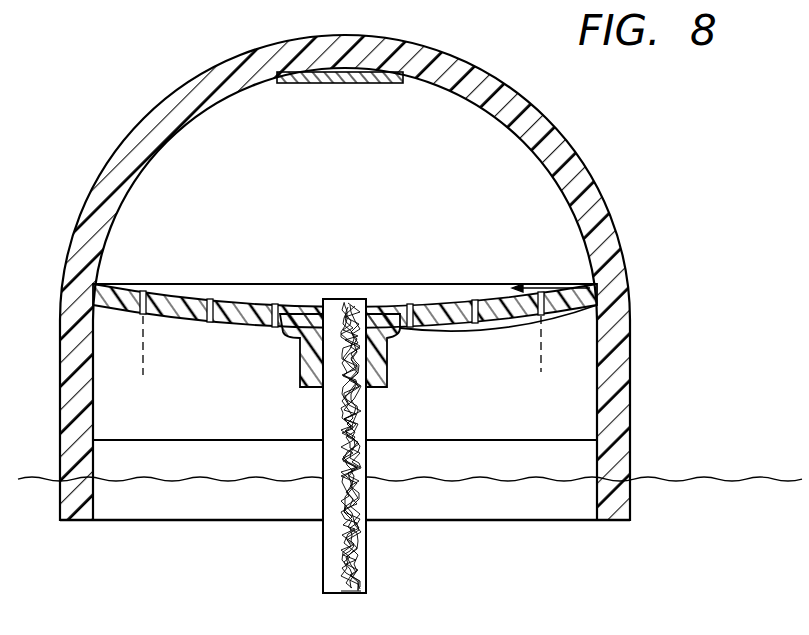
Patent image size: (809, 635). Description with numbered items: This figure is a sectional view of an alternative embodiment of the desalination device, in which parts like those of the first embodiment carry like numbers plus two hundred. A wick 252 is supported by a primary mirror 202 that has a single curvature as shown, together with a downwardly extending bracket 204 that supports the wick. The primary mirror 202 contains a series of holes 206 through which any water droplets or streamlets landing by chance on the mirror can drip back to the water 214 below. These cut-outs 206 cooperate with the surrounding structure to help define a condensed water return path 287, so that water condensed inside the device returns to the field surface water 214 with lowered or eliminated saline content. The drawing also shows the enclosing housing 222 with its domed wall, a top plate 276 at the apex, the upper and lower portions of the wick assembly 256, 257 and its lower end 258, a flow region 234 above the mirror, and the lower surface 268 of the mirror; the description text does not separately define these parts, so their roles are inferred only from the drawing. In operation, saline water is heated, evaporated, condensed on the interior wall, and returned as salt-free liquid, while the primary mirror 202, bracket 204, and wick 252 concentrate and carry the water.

The primary mirror 202 is at (217, 318).
The bracket 204 is at (311, 388).
The holes 206 is at (210, 300).
The water 214 is at (540, 503).
The dome housing 222 is at (594, 182).
The air flow channel 234 is at (593, 266).
The wick 252 is at (368, 412).
The tube upper portion 256 is at (322, 300).
The wick 257 is at (346, 299).
The wick lower end 258 is at (345, 595).
The plate lower surface 268 is at (443, 318).
The top plate 276 is at (370, 72).
The condensed water return path 287 is at (540, 335).